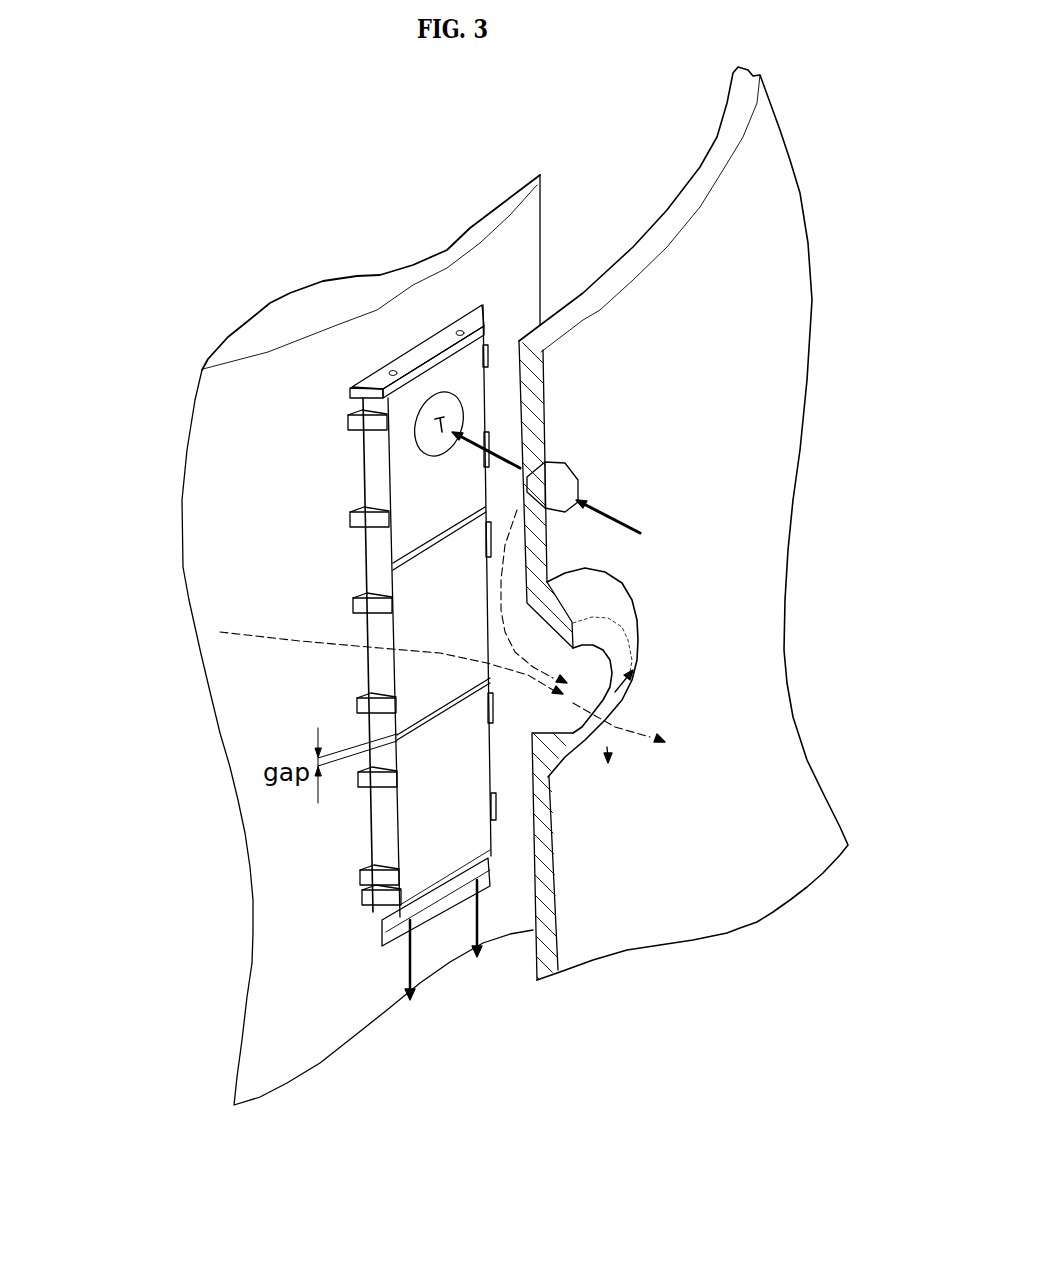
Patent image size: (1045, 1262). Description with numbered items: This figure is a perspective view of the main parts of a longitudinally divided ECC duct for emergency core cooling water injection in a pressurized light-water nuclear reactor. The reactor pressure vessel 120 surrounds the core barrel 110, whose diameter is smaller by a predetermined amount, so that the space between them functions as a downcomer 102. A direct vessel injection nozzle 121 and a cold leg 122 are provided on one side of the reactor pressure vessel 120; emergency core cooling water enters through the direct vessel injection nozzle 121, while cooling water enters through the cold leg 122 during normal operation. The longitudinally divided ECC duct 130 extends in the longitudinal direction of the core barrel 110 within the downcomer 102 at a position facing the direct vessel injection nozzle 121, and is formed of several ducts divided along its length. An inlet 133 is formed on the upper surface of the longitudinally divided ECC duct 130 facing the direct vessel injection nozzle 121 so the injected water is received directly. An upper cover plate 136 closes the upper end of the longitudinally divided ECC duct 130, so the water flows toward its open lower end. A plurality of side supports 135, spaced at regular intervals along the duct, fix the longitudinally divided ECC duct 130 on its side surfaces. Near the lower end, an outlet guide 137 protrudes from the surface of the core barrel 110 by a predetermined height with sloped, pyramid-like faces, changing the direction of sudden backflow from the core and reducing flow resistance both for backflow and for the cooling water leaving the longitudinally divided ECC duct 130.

The downcomer 102 is at (582, 252).
The core barrel 110 is at (213, 432).
The reactor pressure vessel 120 is at (705, 177).
The direct vessel injection nozzle 121 is at (563, 463).
The cold leg 122 is at (600, 600).
The longitudinally divided ECC duct 130 is at (385, 468).
The inlet 133 is at (462, 402).
The side support 135 is at (362, 605).
The upper cover plate 136 is at (351, 389).
The outlet guide 137 is at (382, 941).